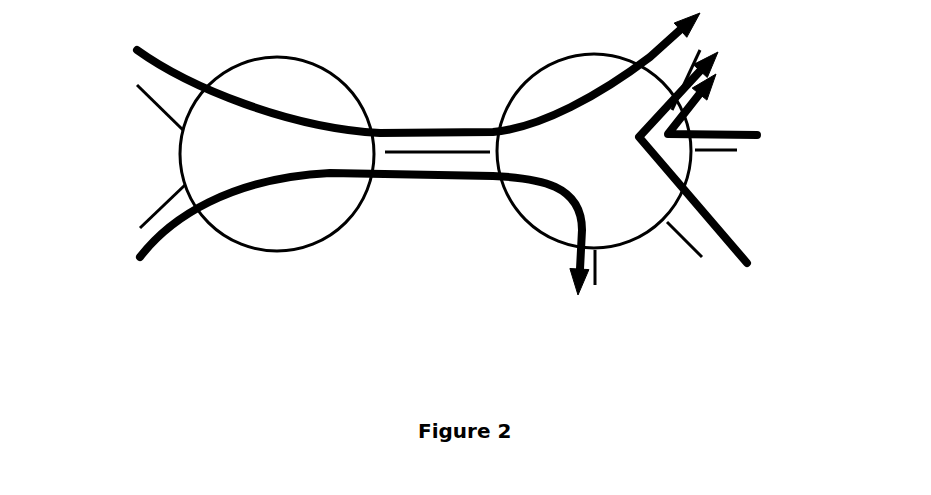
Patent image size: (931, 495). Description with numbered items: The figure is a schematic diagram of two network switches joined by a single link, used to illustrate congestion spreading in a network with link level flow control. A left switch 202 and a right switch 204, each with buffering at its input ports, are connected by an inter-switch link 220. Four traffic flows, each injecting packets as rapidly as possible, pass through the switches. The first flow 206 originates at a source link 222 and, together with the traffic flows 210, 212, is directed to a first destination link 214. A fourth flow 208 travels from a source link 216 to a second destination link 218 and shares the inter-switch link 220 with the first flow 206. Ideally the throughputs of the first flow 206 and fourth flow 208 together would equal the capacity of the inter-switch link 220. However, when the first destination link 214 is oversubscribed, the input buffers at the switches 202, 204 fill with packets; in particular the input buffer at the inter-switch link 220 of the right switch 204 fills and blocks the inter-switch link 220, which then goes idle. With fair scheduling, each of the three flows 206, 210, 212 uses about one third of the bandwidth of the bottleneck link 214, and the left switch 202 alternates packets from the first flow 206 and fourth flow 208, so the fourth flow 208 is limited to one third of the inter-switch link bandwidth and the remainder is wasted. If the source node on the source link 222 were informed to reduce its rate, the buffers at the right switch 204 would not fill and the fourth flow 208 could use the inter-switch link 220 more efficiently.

The left switch 202 is at (297, 58).
The right switch 204 is at (552, 62).
The first flow 206 is at (180, 38).
The fourth flow 208 is at (162, 233).
The traffic flow 210 is at (744, 130).
The traffic flow 212 is at (740, 252).
The first destination link 214 is at (698, 50).
The source link 216 is at (143, 226).
The second destination link 218 is at (594, 289).
The inter-switch link 220 is at (420, 155).
The source link 222 is at (150, 106).